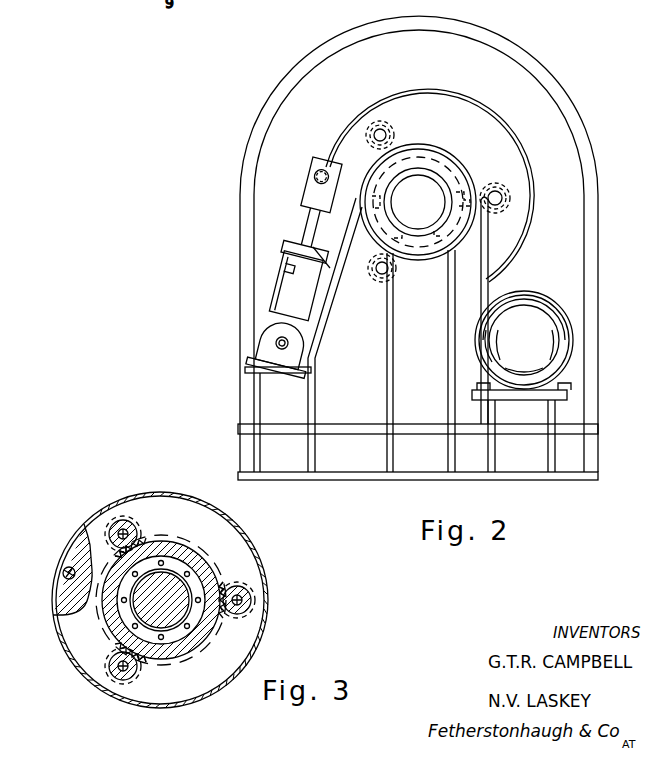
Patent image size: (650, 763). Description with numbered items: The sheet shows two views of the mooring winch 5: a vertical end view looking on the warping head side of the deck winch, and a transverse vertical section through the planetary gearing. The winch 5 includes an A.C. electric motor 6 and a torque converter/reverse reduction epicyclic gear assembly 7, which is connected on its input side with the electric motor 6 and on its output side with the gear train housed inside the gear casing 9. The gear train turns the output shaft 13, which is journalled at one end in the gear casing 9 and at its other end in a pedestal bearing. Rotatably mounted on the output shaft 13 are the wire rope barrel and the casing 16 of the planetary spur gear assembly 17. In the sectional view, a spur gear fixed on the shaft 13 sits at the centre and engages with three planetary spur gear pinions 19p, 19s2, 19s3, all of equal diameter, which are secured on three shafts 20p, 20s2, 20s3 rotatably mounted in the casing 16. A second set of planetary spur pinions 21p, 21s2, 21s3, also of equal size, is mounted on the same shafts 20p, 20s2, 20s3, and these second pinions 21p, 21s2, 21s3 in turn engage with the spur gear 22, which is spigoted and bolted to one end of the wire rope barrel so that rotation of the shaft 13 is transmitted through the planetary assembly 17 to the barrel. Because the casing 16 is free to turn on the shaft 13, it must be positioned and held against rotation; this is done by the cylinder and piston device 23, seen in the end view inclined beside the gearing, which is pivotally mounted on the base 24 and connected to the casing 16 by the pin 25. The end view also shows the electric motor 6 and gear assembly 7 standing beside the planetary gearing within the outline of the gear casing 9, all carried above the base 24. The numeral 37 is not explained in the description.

In FIG. 2, the mooring winch 5 is at (238, 131).
In FIG. 2, the A.C. electric motor 6 is at (534, 325).
In FIG. 2, the torque converter/reverse reduction epicyclic gear assembly 7 is at (518, 292).
In FIG. 2, the gear casing 9 is at (288, 104).
In FIG. 3, the output shaft 13 is at (190, 574).
In FIG. 2, the casing 16 is at (466, 100).
In FIG. 3, the casing 16 is at (186, 496).
In FIG. 3, the planetary spur gear assembly 17 is at (226, 637).
In FIG. 2, the planetary spur gear pinion 19p is at (392, 115).
In FIG. 2, the planetary spur gear pinion 19s2 is at (499, 175).
In FIG. 2, the planetary spur gear pinion 19s3 is at (376, 284).
In FIG. 3, the shaft 20p is at (136, 534).
In FIG. 3, the shaft 20s2 is at (230, 585).
In FIG. 3, the shaft 20s3 is at (142, 668).
In FIG. 3, the planetary spur pinion 21p is at (112, 518).
In FIG. 3, the planetary spur pinion 21s2 is at (248, 592).
In FIG. 3, the planetary spur pinion 21s3 is at (112, 658).
In FIG. 3, the spur gear 22 is at (195, 638).
In FIG. 2, the cylinder and piston device 23 is at (264, 290).
In FIG. 2, the base 24 is at (584, 447).
In FIG. 2, the pin 25 is at (318, 175).
In FIG. 3, the pin 25 is at (69, 566).
In FIG. 2, the bearing hub 37 is at (458, 160).